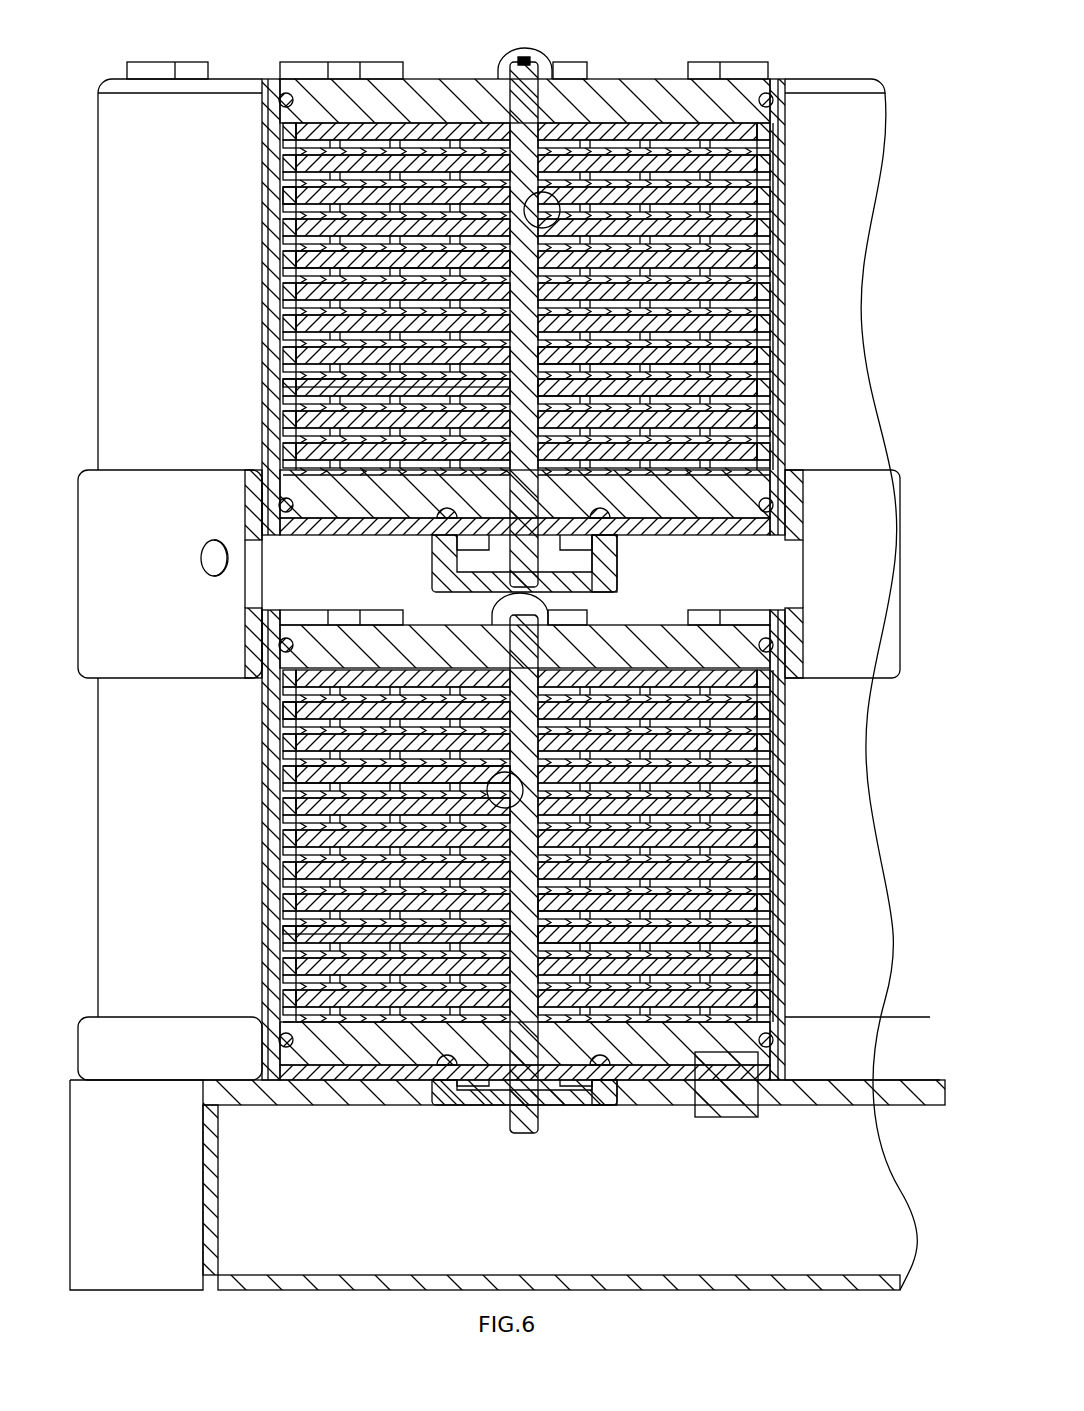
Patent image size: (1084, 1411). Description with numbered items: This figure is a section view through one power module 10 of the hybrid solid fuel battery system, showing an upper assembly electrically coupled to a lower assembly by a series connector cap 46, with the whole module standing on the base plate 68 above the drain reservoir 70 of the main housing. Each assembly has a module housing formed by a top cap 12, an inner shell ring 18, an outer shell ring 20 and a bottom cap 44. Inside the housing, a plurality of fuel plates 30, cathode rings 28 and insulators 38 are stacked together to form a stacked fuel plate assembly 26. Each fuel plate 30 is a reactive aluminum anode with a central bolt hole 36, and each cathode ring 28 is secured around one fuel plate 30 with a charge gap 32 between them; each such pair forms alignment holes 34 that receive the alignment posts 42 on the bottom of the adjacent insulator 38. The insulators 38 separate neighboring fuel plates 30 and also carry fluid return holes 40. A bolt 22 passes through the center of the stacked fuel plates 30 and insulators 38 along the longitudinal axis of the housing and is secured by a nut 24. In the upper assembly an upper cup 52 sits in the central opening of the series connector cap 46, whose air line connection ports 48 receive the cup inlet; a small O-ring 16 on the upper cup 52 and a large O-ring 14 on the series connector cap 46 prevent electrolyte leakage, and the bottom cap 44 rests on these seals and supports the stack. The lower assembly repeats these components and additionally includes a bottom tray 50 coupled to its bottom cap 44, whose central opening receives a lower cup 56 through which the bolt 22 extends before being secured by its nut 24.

The power module 10 is at (220, 56).
The top cap 12 is at (118, 78).
The large O-ring 14 is at (780, 100).
The small O-ring 16 is at (605, 520).
The inner shell ring 18 is at (290, 370).
The outer shell ring 20 is at (873, 115).
The bolt 22 is at (538, 62).
The nut 24 is at (552, 512).
The stacked fuel plate assembly 26 is at (280, 128).
The cathode ring 28 is at (780, 160).
The fuel plate 30 is at (778, 265).
The charge gap 32 is at (775, 215).
The alignment hole 34 is at (290, 246).
The bolt hole 36 is at (548, 206).
The insulator 38 is at (775, 305).
The fluid return hole 40 is at (740, 358).
The alignment post 42 is at (290, 190).
The bottom cap 44 is at (348, 520).
The series connector cap 46 is at (250, 511).
The air line connection port 48 is at (240, 564).
The bottom tray 50 is at (250, 1051).
The upper cup 52 is at (432, 560).
The lower cup 56 is at (458, 1100).
The base plate 68 is at (320, 1102).
The drain reservoir 70 is at (240, 1290).